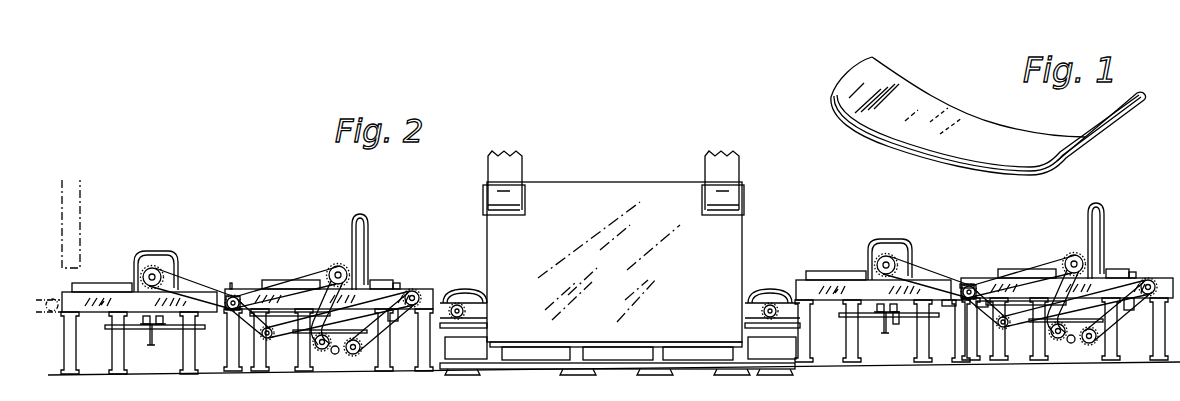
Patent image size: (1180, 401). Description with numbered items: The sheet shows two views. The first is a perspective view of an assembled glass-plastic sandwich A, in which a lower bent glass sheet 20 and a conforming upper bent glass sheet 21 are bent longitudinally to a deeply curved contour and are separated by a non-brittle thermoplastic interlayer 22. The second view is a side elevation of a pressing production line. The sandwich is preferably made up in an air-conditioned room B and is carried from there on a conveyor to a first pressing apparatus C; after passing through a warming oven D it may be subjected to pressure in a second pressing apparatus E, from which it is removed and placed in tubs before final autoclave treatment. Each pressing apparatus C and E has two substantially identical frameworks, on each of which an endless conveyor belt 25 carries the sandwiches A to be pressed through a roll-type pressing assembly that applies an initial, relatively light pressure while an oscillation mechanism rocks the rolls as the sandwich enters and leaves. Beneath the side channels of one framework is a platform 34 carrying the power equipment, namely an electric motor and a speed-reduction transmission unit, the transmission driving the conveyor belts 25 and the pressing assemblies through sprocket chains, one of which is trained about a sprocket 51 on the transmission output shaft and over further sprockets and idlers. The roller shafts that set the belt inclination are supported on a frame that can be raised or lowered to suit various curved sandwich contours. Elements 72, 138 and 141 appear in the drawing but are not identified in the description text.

In FIG. 1, the lower bent glass sheet 20 is at (888, 148).
In FIG. 1, the upper bent glass sheet 21 is at (952, 127).
In FIG. 1, the thermoplastic interlayer 22 is at (915, 156).
In FIG. 2, the endless conveyor belt 25 is at (617, 371).
In FIG. 2, the platform 34 is at (1059, 354).
In FIG. 2, the sprocket 51 is at (323, 350).
In FIG. 2, the rod 72 is at (901, 332).
In FIG. 2, the track 138 is at (996, 351).
In FIG. 2, the track 141 is at (954, 350).
In FIG. 1, the glass-plastic sandwich A is at (924, 104).
In FIG. 2, the air-conditioned room B is at (46, 296).
In FIG. 2, the first pressing apparatus C is at (240, 254).
In FIG. 2, the warming oven D is at (587, 196).
In FIG. 2, the second pressing apparatus E is at (969, 236).